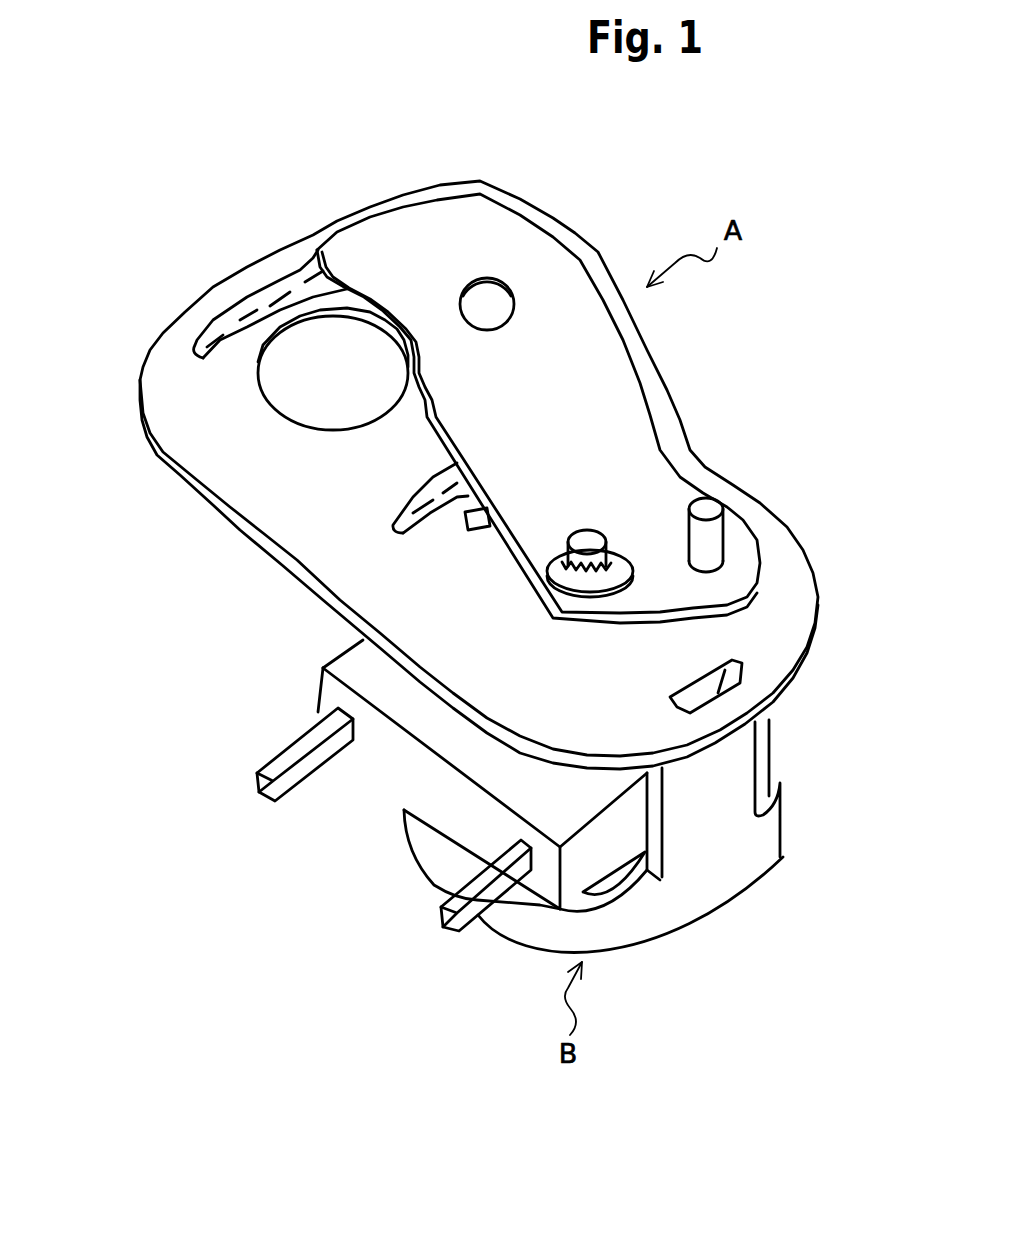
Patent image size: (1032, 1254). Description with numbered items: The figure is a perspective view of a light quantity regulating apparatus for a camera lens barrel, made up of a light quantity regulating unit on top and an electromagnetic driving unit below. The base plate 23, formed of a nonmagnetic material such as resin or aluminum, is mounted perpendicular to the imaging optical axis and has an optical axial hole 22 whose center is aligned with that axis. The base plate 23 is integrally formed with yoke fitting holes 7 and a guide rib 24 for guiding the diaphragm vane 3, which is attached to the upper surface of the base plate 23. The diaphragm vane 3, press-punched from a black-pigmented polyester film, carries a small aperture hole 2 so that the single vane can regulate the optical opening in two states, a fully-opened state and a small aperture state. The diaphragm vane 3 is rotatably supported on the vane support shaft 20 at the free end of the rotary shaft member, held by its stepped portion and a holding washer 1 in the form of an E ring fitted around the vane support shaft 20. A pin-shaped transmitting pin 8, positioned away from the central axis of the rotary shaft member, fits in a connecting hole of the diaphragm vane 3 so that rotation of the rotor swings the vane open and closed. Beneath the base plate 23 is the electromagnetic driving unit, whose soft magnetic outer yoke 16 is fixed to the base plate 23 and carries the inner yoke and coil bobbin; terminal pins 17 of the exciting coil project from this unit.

The holding washer 1 is at (561, 615).
The small aperture hole 2 is at (527, 267).
The diaphragm vane 3 is at (587, 387).
The yoke fitting holes 7 is at (737, 662).
The transmitting pin 8 is at (710, 540).
The outer yoke 16 is at (722, 880).
The terminal pins 17 is at (467, 916).
The vane support shaft 20 is at (588, 540).
The optical axial hole 22 is at (290, 396).
The base plate 23 is at (350, 573).
The guide rib 24 is at (270, 290).